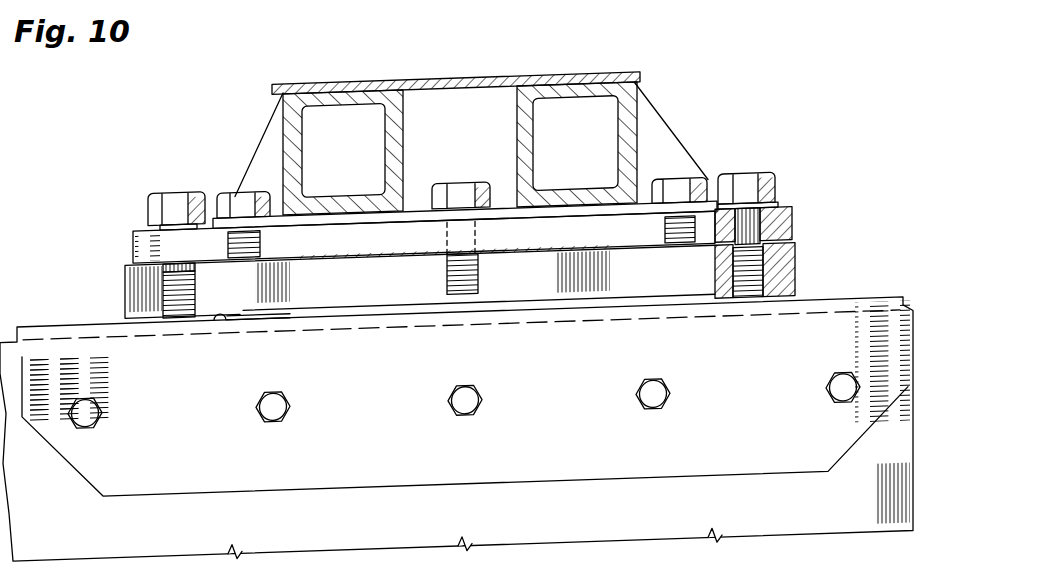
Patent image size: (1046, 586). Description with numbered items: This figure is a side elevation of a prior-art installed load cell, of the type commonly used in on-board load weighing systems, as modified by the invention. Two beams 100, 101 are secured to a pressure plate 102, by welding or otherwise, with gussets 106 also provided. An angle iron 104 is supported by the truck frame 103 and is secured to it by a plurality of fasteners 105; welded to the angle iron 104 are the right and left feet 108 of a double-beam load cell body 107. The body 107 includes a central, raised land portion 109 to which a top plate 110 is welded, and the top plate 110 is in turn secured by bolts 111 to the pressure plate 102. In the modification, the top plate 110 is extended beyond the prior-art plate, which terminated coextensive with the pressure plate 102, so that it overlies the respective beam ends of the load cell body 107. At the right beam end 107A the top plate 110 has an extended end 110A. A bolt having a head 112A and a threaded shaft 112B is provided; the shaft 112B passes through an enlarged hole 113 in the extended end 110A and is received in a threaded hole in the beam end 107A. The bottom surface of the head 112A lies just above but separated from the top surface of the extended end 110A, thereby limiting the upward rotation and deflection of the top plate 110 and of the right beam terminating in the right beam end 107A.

The beam 100 is at (350, 95).
The beam 101 is at (573, 88).
The pressure plate 102 is at (413, 217).
The truck frame 103 is at (803, 510).
The angle iron 104 is at (577, 468).
The fasteners 105 is at (268, 403).
The gussets 106 is at (267, 142).
The double-beam load cell body 107 is at (512, 288).
The right beam end 107A is at (777, 278).
The feet 108 is at (220, 315).
The central raised land portion 109 is at (570, 248).
The top plate 110 is at (542, 230).
The extended end 110A is at (792, 222).
The bolts 111 is at (238, 192).
The head 112A is at (750, 180).
The threaded shaft 112B is at (753, 222).
The enlarged hole 113 is at (718, 212).